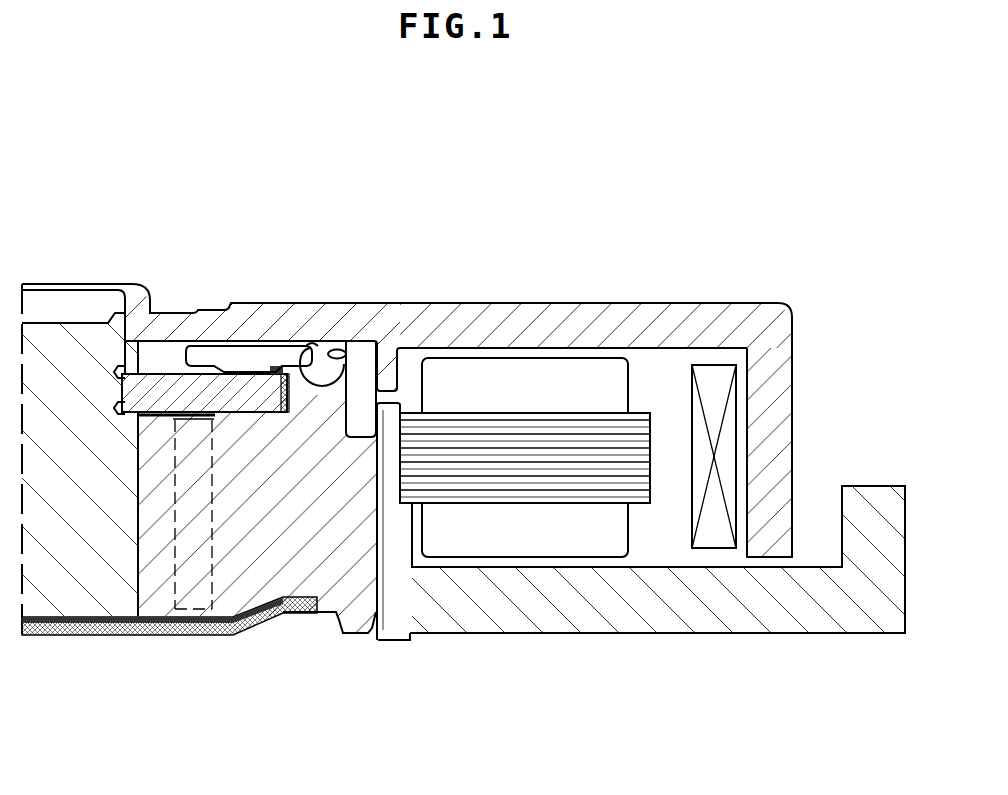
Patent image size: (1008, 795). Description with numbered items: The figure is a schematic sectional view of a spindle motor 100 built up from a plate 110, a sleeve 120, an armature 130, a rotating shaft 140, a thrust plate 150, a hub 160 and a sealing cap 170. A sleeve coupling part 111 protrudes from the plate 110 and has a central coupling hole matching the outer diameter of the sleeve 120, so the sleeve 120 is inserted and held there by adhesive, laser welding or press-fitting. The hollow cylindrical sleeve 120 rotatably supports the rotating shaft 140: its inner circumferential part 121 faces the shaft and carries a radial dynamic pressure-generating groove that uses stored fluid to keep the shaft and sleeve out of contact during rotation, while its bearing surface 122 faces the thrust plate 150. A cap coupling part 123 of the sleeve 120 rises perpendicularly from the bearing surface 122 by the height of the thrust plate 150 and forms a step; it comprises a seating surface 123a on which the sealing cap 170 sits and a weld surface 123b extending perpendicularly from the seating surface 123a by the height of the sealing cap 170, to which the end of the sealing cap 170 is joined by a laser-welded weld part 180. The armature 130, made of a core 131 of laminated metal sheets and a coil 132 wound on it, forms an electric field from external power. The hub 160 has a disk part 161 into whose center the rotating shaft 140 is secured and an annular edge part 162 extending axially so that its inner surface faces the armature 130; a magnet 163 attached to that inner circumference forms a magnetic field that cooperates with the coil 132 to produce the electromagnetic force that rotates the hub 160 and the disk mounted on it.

The spindle motor 100 is at (100, 126).
The plate 110 is at (638, 558).
The sleeve coupling part 111 is at (388, 470).
The sleeve 120 is at (304, 546).
The inner circumferential part 121 is at (140, 553).
The bearing surface 122 is at (255, 418).
The cap coupling part 123 is at (356, 286).
The seating surface 123a is at (357, 367).
The weld surface 123b is at (340, 350).
The armature 130 is at (525, 561).
The core 131 is at (520, 473).
The coil 132 is at (574, 537).
The rotating shaft 140 is at (77, 558).
The thrust plate 150 is at (162, 377).
The hub 160 is at (599, 371).
The disk part 161 is at (535, 334).
The annular edge part 162 is at (763, 397).
The magnet 163 is at (709, 392).
The sealing cap 170 is at (241, 346).
The weld part 180 is at (312, 345).